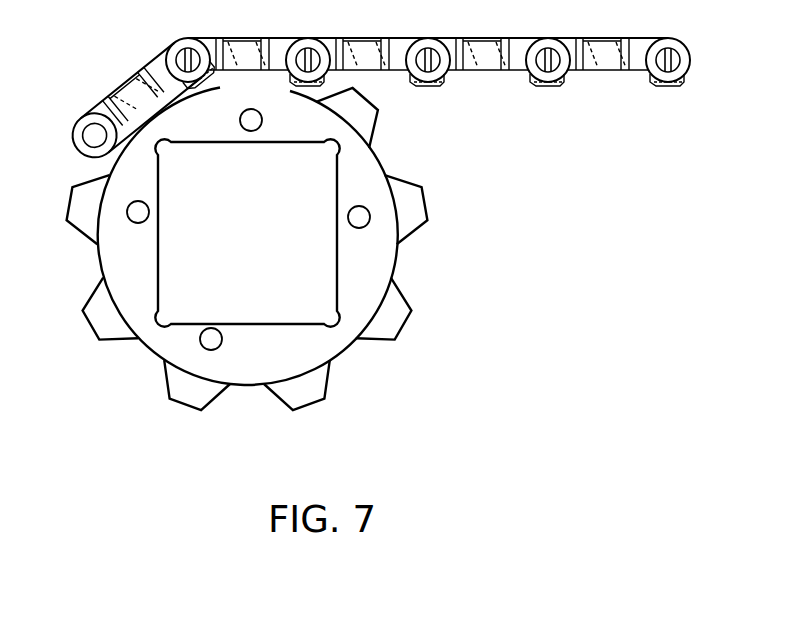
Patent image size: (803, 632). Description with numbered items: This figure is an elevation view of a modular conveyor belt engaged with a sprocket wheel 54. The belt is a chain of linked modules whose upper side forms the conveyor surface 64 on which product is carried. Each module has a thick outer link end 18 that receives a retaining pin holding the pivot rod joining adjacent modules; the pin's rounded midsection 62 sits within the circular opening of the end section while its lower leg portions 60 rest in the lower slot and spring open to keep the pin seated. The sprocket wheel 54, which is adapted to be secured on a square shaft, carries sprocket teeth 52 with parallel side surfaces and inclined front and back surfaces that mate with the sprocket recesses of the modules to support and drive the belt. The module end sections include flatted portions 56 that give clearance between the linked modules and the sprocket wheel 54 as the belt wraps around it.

The outer link end 18 is at (681, 43).
The sprocket teeth 52 is at (409, 212).
The sprocket wheel 54 is at (372, 274).
The flatted portions 56 is at (110, 156).
The lower leg portions 60 is at (679, 82).
The rounded midsection 62 is at (677, 64).
The conveyor surface 64 is at (293, 38).